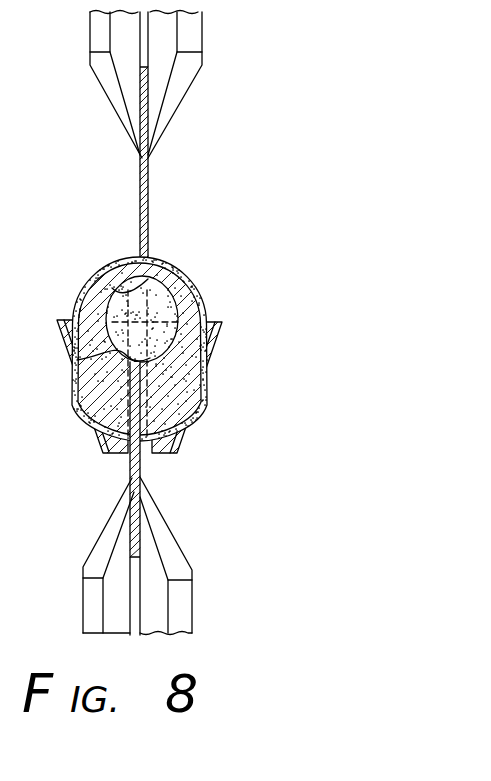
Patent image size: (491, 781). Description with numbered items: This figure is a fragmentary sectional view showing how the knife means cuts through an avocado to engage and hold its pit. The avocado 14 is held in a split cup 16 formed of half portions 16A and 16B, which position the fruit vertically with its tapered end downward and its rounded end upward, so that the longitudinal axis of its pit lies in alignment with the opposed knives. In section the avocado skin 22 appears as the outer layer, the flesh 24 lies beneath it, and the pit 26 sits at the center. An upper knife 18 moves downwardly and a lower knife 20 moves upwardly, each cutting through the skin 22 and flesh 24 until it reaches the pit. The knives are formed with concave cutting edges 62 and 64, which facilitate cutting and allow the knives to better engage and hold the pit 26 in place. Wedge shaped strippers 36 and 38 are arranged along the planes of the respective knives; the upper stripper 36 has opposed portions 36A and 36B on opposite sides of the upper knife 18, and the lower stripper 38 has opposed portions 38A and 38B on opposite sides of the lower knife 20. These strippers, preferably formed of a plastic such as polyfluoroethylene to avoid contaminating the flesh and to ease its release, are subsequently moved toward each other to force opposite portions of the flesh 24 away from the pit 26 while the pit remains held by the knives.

The avocado 14 is at (188, 339).
The split cup 16 is at (151, 363).
The half portion of split cup 16A is at (100, 435).
The half portion of split cup 16B is at (188, 423).
The upper knife 18 is at (148, 192).
The lower knife 20 is at (128, 470).
The avocado skin 22 is at (197, 283).
The avocado flesh 24 is at (103, 395).
The avocado pit 26 is at (145, 298).
The wedge shaped stripper 36 is at (151, 86).
The opposed portion of stripper 36A is at (123, 93).
The opposed portion of stripper 36B is at (188, 102).
The wedge shaped stripper 38 is at (142, 556).
The opposed portion of stripper 38A is at (95, 543).
The opposed portion of stripper 38B is at (177, 550).
The concave cutting edge 62 is at (112, 288).
The concave cutting edge 64 is at (77, 360).